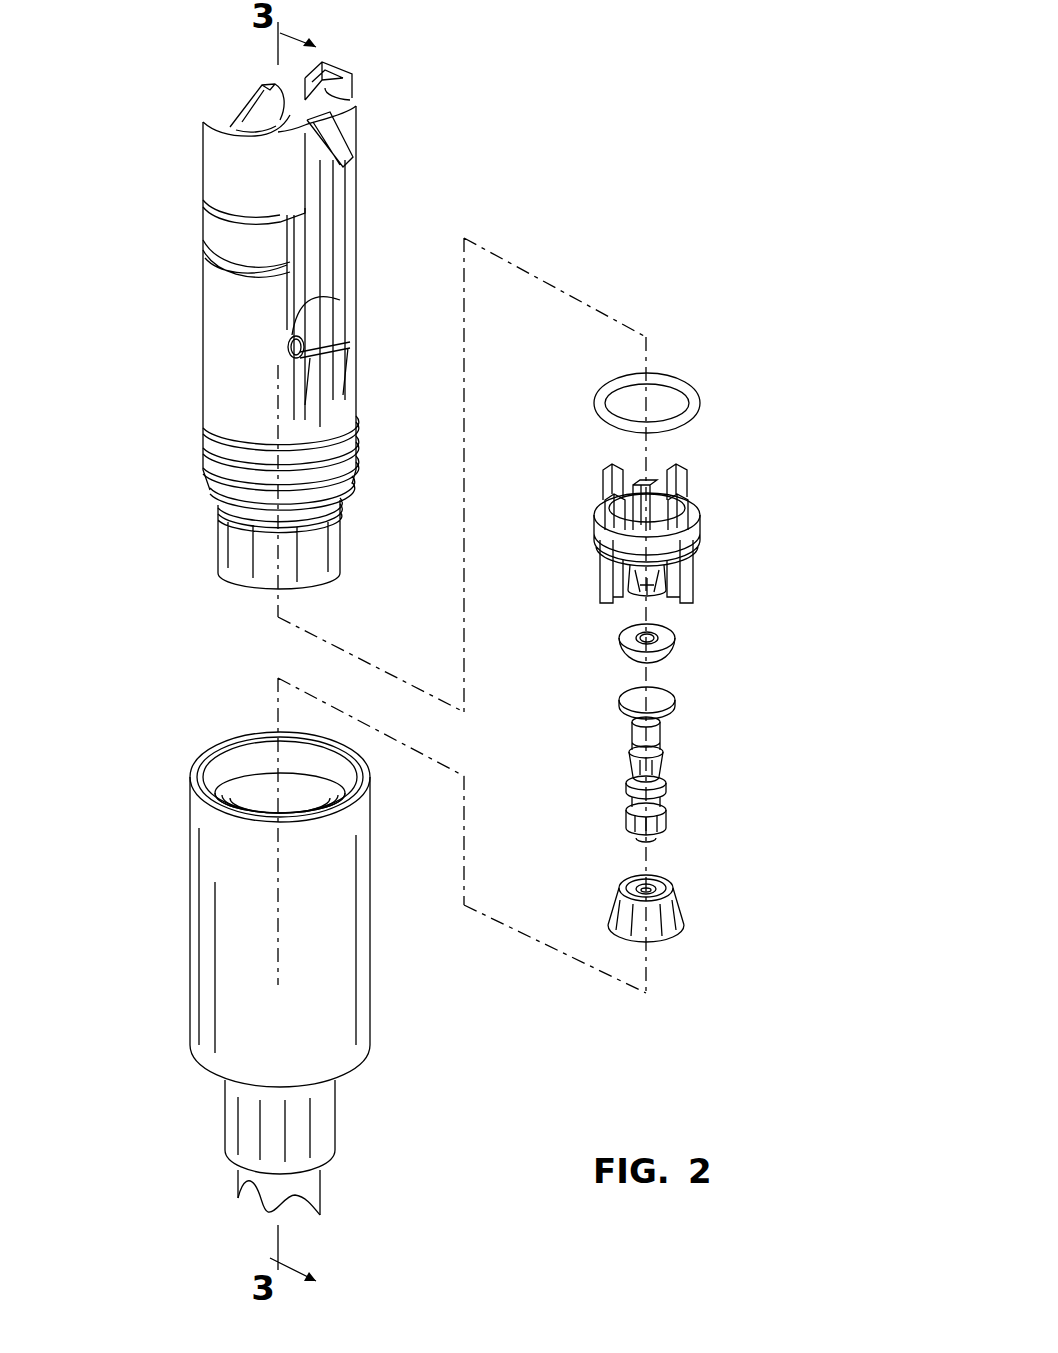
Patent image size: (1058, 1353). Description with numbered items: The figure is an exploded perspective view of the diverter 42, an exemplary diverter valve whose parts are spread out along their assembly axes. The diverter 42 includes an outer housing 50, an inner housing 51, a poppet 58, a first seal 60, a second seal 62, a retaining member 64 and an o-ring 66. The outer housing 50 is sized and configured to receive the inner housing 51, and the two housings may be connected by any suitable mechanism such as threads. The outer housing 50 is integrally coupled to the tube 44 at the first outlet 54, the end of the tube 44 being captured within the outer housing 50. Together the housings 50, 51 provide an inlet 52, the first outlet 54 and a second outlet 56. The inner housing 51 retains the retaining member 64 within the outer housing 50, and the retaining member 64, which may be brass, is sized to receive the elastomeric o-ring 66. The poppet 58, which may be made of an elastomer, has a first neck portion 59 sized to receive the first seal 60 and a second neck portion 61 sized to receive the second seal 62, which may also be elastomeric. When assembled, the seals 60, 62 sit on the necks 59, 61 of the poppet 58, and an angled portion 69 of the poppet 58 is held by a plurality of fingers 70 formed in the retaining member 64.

The diverter 42 is at (824, 557).
The tube 44 is at (240, 1178).
The outer housing 50 is at (362, 970).
The inner housing 51 is at (212, 340).
The inlet 52 is at (242, 114).
The first outlet 54 is at (293, 1214).
The second outlet 56 is at (322, 78).
The poppet 58 is at (706, 809).
The first neck portion 59 is at (632, 808).
The first seal 60 is at (678, 913).
The second neck portion 61 is at (662, 727).
The second seal 62 is at (630, 640).
The retaining member 64 is at (686, 515).
The o-ring 66 is at (680, 387).
The angled portion 69 is at (630, 750).
The fingers 70 is at (652, 592).